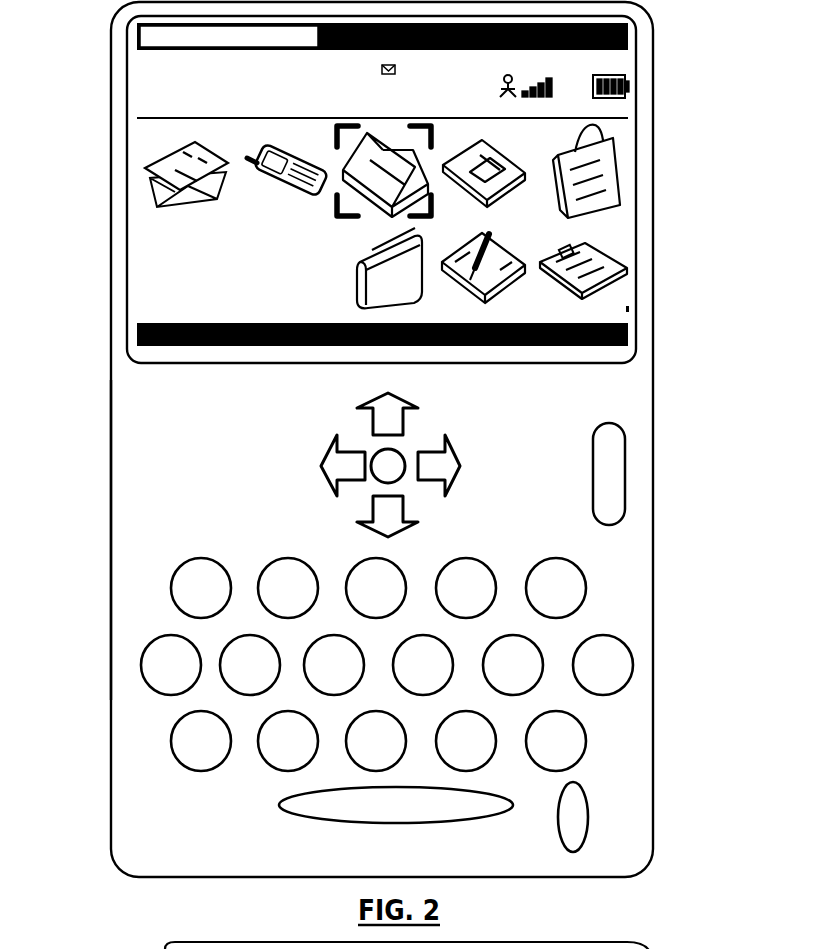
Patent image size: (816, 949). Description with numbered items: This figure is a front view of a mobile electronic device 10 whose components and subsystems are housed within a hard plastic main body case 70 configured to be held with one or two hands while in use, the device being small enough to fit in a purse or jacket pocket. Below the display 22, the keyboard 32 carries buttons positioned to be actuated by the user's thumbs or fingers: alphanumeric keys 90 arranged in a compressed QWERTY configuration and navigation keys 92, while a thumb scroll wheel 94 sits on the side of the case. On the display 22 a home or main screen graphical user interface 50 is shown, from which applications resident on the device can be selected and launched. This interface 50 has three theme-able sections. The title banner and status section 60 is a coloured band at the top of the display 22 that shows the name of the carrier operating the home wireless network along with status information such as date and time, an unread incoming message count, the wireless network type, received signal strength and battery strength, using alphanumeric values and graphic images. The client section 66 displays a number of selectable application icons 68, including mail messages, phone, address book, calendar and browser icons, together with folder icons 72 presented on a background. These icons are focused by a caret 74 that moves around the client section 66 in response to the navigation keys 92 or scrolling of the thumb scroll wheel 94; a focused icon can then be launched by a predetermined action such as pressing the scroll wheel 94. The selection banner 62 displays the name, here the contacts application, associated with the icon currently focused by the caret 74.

The mobile electronic device 10 is at (653, 279).
The display 22 is at (638, 65).
The keyboard 32 is at (203, 542).
The graphical user interface 50 is at (620, 170).
The title banner and status section 60 is at (115, 18).
The selection banner 62 is at (127, 345).
The client section 66 is at (115, 120).
The application icons 68 is at (540, 258).
The main body case 70 is at (111, 418).
The folder icons 72 is at (365, 247).
The caret 74 is at (335, 124).
The alphanumeric keys 90 is at (633, 665).
The navigation keys 92 is at (462, 466).
The thumb scroll wheel 94 is at (625, 473).